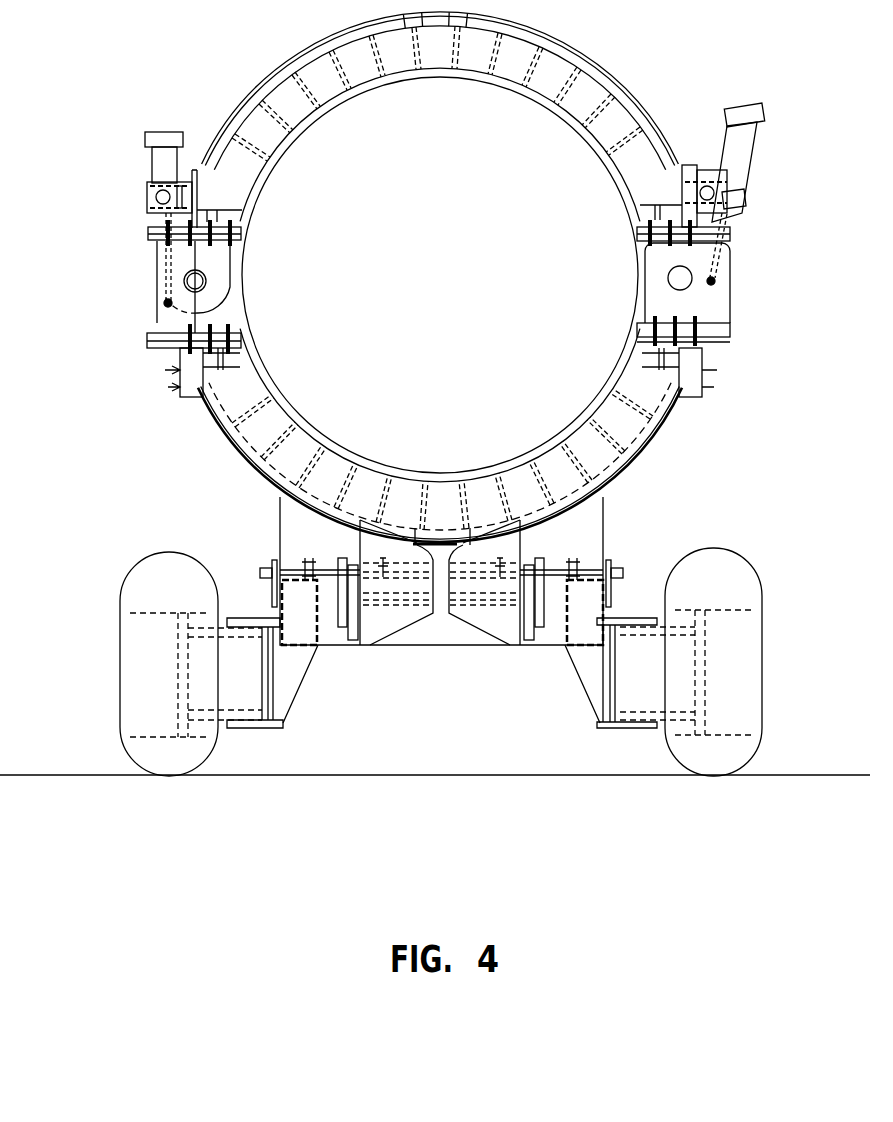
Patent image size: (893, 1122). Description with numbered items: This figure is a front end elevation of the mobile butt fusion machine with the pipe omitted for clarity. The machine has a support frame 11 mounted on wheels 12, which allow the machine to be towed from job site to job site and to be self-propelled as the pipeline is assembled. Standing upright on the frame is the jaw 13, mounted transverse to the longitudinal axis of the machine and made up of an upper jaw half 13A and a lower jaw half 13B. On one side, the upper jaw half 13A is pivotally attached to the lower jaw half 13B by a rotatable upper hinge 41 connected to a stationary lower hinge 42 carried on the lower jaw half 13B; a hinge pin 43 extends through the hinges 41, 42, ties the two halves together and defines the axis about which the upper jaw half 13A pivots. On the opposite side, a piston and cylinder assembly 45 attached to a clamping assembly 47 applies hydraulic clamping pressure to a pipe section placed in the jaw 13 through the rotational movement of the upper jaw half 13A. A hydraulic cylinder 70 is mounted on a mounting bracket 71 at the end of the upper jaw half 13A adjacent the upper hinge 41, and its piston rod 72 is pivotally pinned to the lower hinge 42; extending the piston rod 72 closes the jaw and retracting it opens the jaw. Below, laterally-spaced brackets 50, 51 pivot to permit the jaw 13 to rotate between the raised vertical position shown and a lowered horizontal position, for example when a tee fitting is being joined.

The support frame 11 is at (457, 633).
The wheels 12 is at (130, 705).
The jaw 13 is at (253, 88).
The upper jaw half 13A is at (318, 68).
The lower jaw half 13B is at (625, 435).
The upper hinge 41 is at (238, 233).
The lower hinge 42 is at (163, 320).
The hinge pin 43 is at (160, 247).
The piston and cylinder assembly 45 is at (740, 160).
The clamping assembly 47 is at (718, 305).
The bracket 50 is at (272, 578).
The bracket 51 is at (608, 577).
The hydraulic cylinder 70 is at (147, 160).
The mounting bracket 71 is at (150, 190).
The piston rod 72 is at (160, 232).